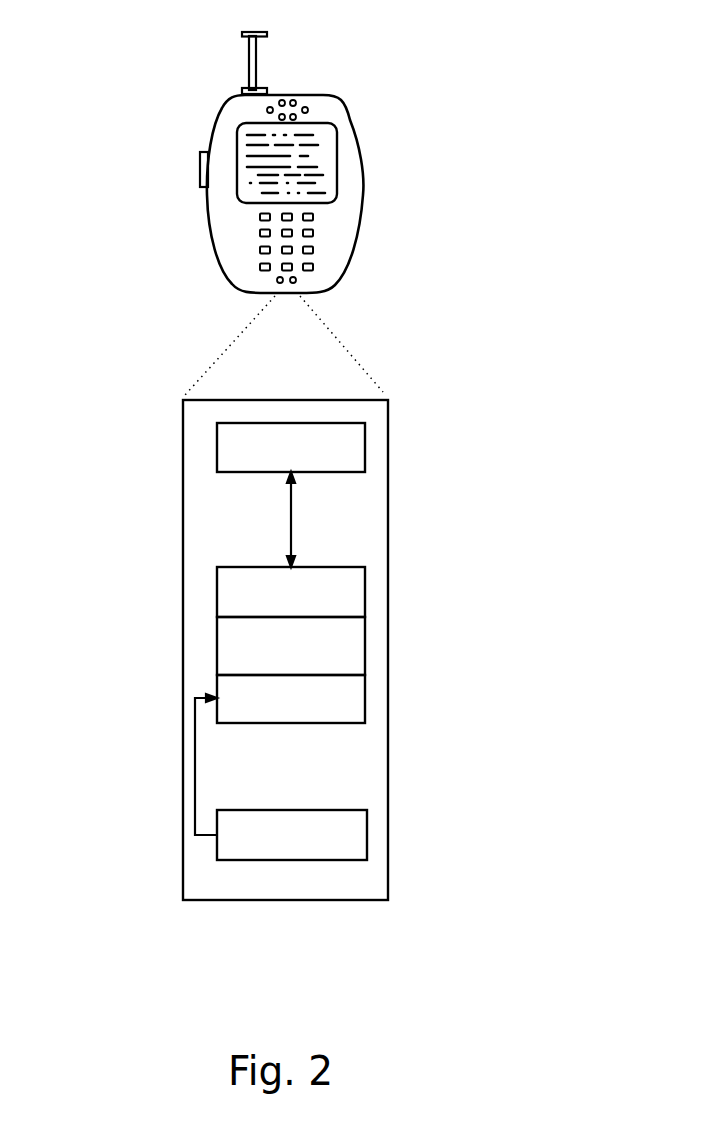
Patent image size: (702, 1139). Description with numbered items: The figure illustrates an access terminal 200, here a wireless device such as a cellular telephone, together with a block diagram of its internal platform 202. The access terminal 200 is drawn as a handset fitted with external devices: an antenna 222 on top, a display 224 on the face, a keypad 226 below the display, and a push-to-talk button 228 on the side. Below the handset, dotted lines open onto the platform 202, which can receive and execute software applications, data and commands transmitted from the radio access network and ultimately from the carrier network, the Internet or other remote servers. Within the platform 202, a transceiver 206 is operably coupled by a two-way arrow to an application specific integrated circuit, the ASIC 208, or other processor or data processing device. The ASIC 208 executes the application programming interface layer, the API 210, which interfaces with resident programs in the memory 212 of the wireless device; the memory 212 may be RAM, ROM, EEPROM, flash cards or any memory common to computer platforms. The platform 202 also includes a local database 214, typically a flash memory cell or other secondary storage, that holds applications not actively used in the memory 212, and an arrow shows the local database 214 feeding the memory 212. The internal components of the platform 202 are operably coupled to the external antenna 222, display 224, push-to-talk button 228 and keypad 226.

The access terminal 200 is at (343, 272).
The platform 202 is at (183, 568).
The transceiver 206 is at (365, 448).
The application specific integrated circuit 208 is at (365, 598).
The application programming interface layer 210 is at (365, 640).
The memory 212 is at (365, 697).
The local database 214 is at (367, 820).
The antenna 222 is at (258, 43).
The display 224 is at (337, 152).
The keypad 226 is at (313, 233).
The push-to-talk button 228 is at (200, 162).